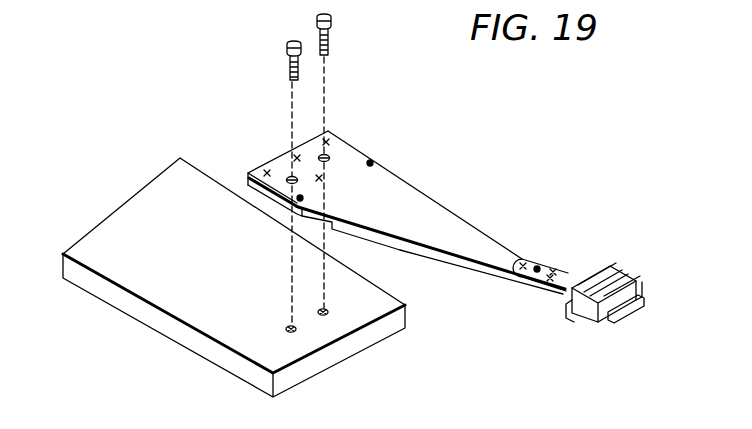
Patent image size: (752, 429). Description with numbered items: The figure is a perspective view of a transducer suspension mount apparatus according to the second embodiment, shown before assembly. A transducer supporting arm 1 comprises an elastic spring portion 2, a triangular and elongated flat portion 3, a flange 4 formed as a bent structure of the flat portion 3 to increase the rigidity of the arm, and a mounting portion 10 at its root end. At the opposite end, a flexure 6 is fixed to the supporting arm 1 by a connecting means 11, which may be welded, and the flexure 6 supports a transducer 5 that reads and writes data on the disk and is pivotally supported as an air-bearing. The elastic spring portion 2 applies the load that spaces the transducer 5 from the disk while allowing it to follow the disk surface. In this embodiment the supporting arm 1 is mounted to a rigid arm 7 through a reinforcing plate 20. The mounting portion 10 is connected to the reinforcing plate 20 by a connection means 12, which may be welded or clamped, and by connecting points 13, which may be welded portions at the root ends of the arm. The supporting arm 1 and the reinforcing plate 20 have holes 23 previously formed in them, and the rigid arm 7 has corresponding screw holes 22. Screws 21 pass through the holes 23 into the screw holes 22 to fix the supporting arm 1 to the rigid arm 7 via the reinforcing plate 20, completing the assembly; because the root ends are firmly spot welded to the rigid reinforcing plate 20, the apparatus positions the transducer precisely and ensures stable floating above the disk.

The transducer supporting arm 1 is at (395, 216).
The elastic spring portion 2 is at (387, 224).
The triangular and elongated flat portion 3 is at (474, 213).
The flange 4 is at (463, 268).
The transducer 5 is at (588, 320).
The flexure 6 is at (556, 292).
The rigid arm 7 is at (110, 222).
The mounting portion 10 is at (338, 141).
The connecting means 11 is at (526, 259).
The connection means 12 is at (265, 172).
The connecting points 13 is at (374, 163).
The reinforcing plate 20 is at (247, 181).
The screws 21 is at (290, 43).
The screw holes 22 is at (296, 331).
The holes 23 is at (292, 176).